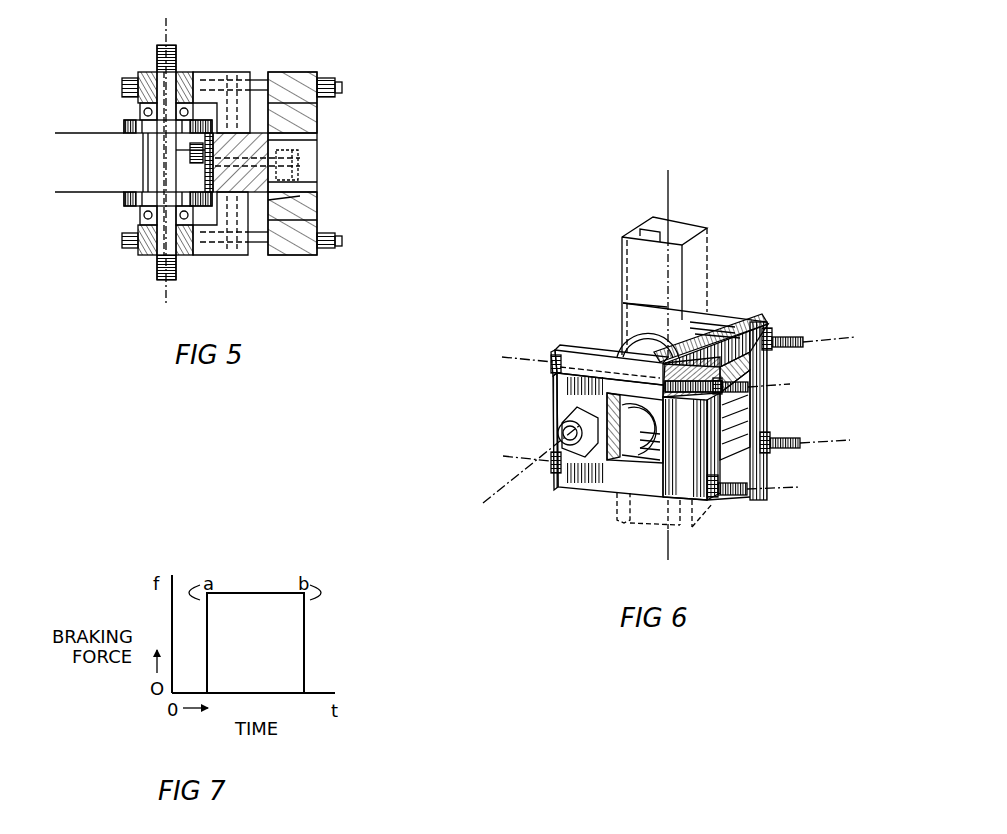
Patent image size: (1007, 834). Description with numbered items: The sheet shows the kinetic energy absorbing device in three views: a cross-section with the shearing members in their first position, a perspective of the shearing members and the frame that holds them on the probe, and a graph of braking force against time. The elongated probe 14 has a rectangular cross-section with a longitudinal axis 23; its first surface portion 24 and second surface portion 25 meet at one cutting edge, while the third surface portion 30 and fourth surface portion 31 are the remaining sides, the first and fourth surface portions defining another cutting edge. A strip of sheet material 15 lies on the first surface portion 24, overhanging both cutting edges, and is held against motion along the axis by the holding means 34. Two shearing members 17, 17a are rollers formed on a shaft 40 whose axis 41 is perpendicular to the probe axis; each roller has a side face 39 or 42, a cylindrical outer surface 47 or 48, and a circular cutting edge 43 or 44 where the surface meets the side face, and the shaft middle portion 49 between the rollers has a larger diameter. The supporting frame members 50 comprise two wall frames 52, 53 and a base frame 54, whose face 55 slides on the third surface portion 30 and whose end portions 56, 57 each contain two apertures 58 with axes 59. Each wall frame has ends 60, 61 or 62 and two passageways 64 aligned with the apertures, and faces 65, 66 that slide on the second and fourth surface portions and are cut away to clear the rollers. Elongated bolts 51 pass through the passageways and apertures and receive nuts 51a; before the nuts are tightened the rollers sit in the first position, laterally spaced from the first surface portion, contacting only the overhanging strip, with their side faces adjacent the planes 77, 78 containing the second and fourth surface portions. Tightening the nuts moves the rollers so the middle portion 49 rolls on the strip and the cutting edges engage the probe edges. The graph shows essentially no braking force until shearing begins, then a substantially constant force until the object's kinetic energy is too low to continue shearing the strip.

In FIG. 5, the probe 14 is at (258, 127).
In FIG. 5, the strip of sheet material 15 is at (205, 148).
In FIG. 5, the shearing member 17 is at (128, 210).
In FIG. 6, the shearing member 17 is at (618, 477).
In FIG. 5, the shearing member 17a is at (125, 122).
In FIG. 6, the shearing member 17a is at (614, 352).
In FIG. 6, the longitudinal axis 23 is at (666, 188).
In FIG. 5, the first surface portion 24 is at (208, 180).
In FIG. 5, the second surface portion 25 is at (300, 215).
In FIG. 5, the third surface portion 30 is at (300, 152).
In FIG. 6, the third surface portion 30 is at (701, 247).
In FIG. 5, the fourth surface portion 31 is at (228, 130).
In FIG. 5, the means for holding the strip 34 is at (284, 178).
In FIG. 5, the side face 39 is at (143, 190).
In FIG. 5, the shaft 40 is at (156, 64).
In FIG. 5, the shaft axis 41 is at (168, 34).
In FIG. 6, the shaft axis 41 is at (500, 480).
In FIG. 5, the side face 42 is at (145, 137).
In FIG. 5, the circular cutting edge 43 is at (124, 194).
In FIG. 5, the circular cutting edge 44 is at (125, 128).
In FIG. 5, the cylindrical outer surface 47 is at (125, 204).
In FIG. 5, the cylindrical outer surface 48 is at (123, 125).
In FIG. 5, the middle portion 49 is at (145, 163).
In FIG. 6, the supporting frame members 50 is at (742, 312).
In FIG. 5, the bolt 51 is at (127, 82).
In FIG. 6, the bolt 51 is at (800, 338).
In FIG. 5, the nut 51a is at (324, 76).
In FIG. 6, the nut 51a is at (784, 333).
In FIG. 5, the wall frame 52 is at (232, 258).
In FIG. 6, the wall frame 52 is at (577, 490).
In FIG. 5, the wall frame 53 is at (217, 73).
In FIG. 6, the wall frame 53 is at (716, 312).
In FIG. 5, the base frame 54 is at (320, 102).
In FIG. 6, the base frame 54 is at (690, 446).
In FIG. 5, the face 55 is at (300, 192).
In FIG. 6, the end portion 56 is at (668, 502).
In FIG. 6, the end portion 57 is at (770, 413).
In FIG. 5, the aperture 58 is at (290, 80).
In FIG. 6, the axis 59 is at (829, 350).
In FIG. 5, the end 60 is at (250, 255).
In FIG. 5, the end 61 is at (138, 253).
In FIG. 5, the end 62 is at (253, 80).
In FIG. 5, the passageway 64 is at (240, 80).
In FIG. 5, the face 65 is at (300, 196).
In FIG. 5, the face 66 is at (315, 145).
In FIG. 5, the plane 77 is at (55, 192).
In FIG. 5, the plane 78 is at (56, 133).